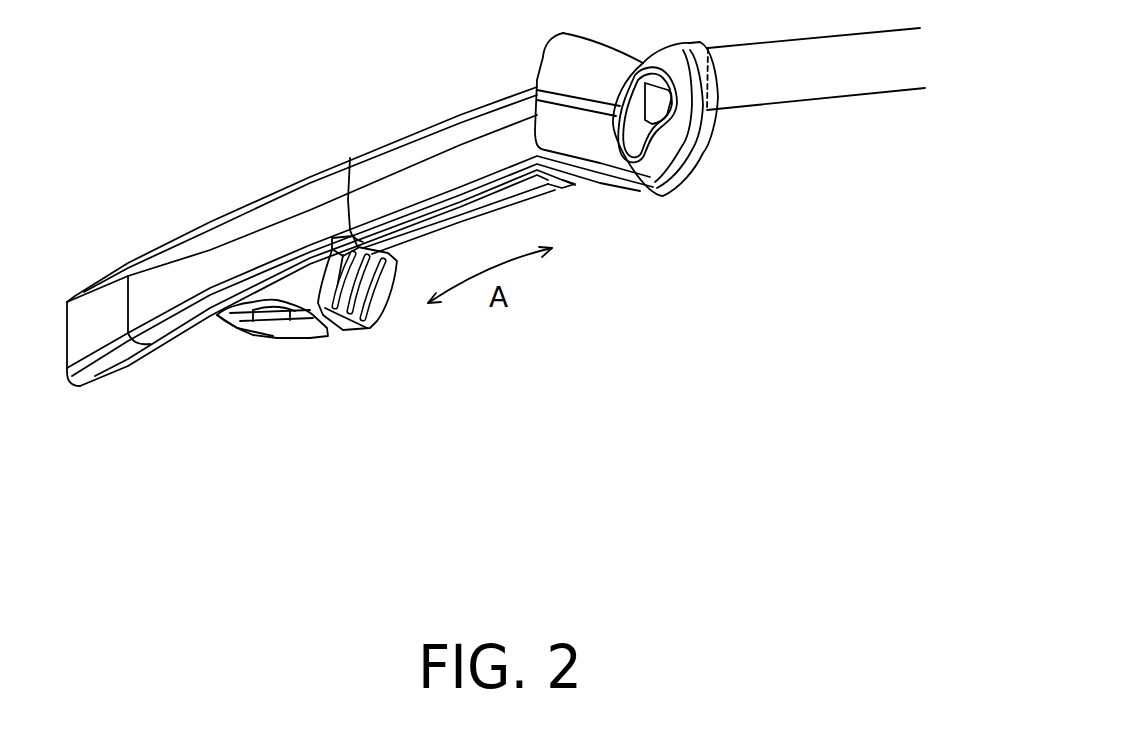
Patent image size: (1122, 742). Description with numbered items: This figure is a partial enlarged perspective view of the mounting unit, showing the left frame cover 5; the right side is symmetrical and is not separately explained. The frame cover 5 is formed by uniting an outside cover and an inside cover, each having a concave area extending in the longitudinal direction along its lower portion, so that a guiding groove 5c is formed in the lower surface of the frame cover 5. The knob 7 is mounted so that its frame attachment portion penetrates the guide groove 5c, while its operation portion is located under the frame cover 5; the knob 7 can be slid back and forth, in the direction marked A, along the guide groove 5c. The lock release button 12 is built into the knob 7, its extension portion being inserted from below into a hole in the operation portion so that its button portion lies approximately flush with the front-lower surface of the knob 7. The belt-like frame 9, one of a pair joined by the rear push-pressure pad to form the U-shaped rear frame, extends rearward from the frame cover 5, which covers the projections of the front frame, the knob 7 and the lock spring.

The frame cover 5 is at (72, 332).
The guiding groove 5c is at (563, 187).
The knob 7 is at (352, 340).
The belt-like frame 9 is at (792, 92).
The lock release button 12 is at (293, 330).